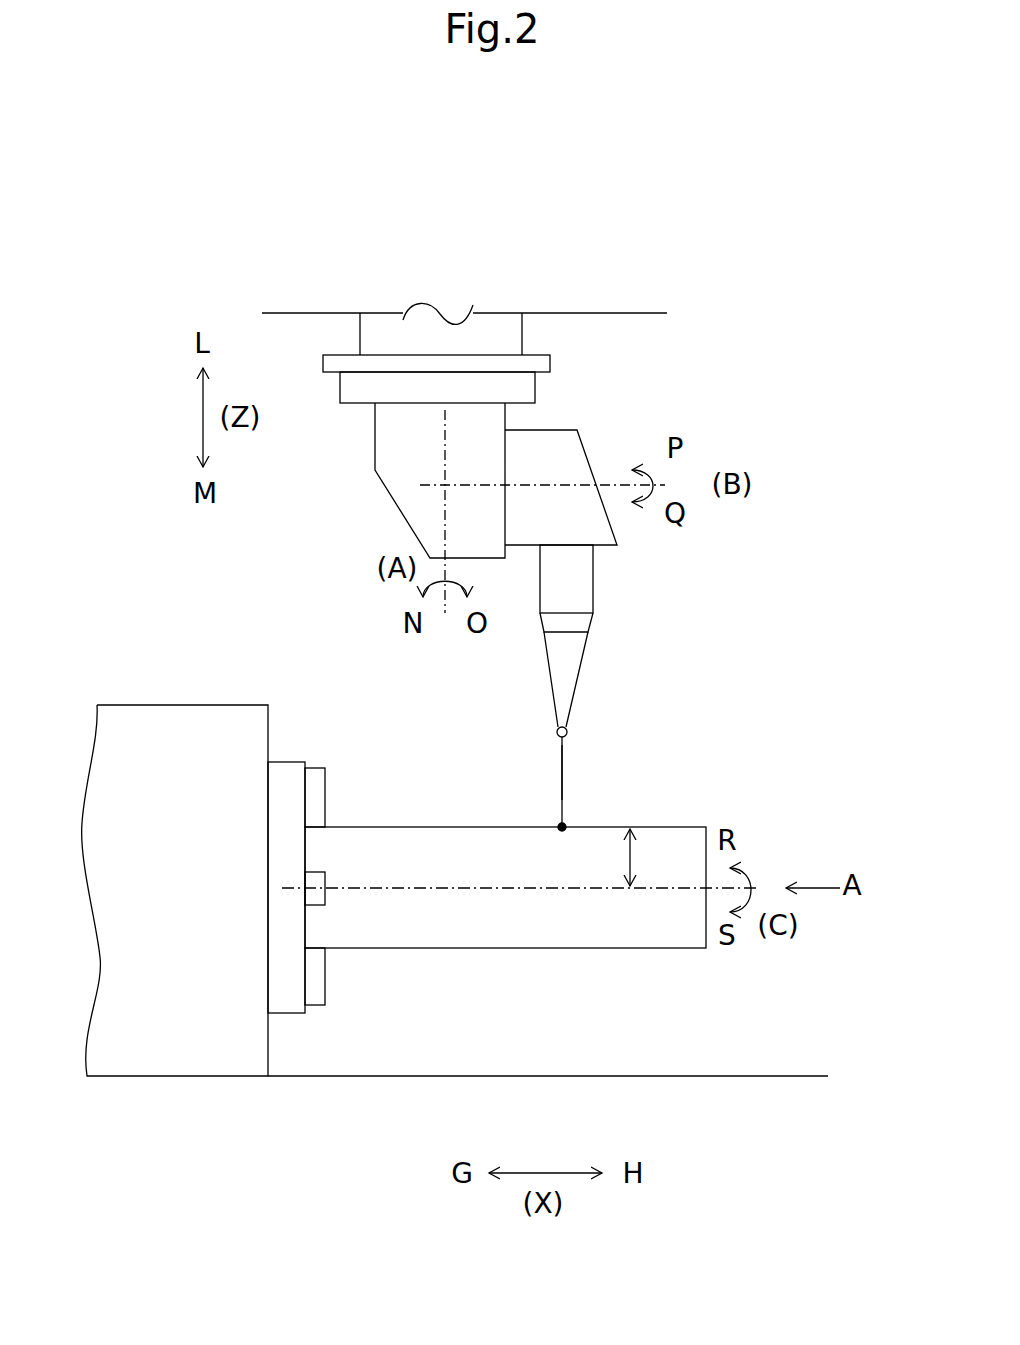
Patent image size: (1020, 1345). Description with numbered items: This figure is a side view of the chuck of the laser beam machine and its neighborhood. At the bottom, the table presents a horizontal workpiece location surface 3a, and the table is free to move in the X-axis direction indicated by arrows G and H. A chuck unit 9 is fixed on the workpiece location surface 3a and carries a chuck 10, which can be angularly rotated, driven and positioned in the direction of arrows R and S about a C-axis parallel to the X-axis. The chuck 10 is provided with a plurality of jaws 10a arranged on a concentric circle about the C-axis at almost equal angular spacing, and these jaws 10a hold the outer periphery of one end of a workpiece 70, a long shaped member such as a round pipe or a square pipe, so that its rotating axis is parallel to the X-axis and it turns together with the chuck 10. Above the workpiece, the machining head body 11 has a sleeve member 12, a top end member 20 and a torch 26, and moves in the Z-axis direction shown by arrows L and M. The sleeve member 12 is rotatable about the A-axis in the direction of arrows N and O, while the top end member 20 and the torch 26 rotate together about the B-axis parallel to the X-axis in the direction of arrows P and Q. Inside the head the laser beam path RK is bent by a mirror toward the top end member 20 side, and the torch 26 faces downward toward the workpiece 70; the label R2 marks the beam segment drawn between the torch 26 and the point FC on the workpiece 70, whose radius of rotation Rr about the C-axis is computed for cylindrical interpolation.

The machining head body 11 is at (677, 368).
The sleeve member 12 is at (387, 500).
The top end member 20 is at (567, 429).
The torch 26 is at (593, 618).
The laser beam path RK is at (553, 760).
The stylus arm length R2 is at (562, 773).
The contact point FC is at (560, 827).
The chuck unit 9 is at (172, 698).
The chuck 10 is at (305, 1023).
The jaws 10a is at (328, 785).
The workpiece 70 is at (650, 952).
The workpiece location surface 3a is at (752, 1074).